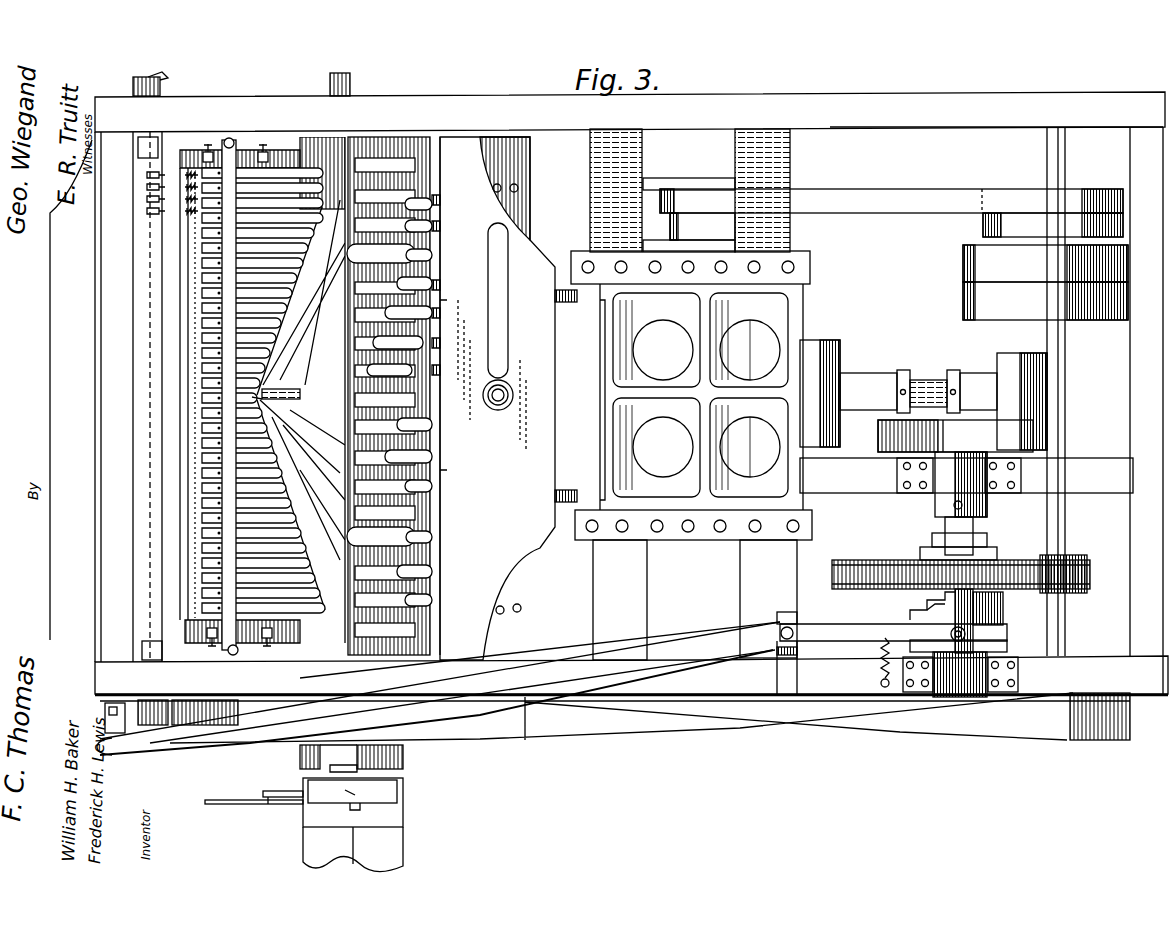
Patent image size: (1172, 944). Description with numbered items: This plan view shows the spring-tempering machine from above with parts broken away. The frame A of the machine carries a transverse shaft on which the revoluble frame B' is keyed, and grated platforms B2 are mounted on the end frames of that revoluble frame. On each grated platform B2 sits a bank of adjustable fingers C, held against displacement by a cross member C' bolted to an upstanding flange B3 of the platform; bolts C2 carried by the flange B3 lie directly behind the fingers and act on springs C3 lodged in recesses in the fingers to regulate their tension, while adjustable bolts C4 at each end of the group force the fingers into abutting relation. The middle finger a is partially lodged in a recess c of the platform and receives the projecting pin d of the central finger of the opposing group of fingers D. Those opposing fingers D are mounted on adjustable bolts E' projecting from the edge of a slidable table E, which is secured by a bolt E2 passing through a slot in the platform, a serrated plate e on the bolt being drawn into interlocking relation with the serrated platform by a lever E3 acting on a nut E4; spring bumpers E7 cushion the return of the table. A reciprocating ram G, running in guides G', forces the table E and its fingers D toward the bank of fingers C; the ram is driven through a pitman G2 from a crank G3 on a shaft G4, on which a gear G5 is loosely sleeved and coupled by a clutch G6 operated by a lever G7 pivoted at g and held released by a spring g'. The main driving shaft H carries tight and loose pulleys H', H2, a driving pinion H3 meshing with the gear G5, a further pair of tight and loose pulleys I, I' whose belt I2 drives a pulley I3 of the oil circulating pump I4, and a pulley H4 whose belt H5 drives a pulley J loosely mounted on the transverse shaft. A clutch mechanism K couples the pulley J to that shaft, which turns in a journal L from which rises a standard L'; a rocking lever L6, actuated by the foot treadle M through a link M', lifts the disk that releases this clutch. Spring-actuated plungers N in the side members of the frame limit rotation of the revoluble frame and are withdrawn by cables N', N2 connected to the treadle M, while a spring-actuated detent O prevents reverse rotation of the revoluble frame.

The frame of the machine A is at (413, 104).
The cable N' is at (163, 82).
The spring actuated detent O is at (340, 143).
The spring actuated plungers N is at (131, 397).
The upstanding flange B3 is at (197, 142).
The cross member C' is at (230, 396).
The adjustable bolts C4 is at (265, 152).
The bolts C2 is at (158, 214).
The springs C3 is at (188, 213).
The serrated plate e is at (304, 268).
The adjustable fingers C is at (263, 404).
The revoluble frame B' is at (301, 390).
The middle finger a is at (285, 389).
The recess c is at (283, 402).
The projecting pin d is at (373, 396).
The grated platforms B2 is at (372, 148).
The adjustable fingers D is at (407, 283).
The slidable tables E is at (497, 398).
The lever E3 is at (505, 292).
The bolt E2 is at (510, 392).
The nut E4 is at (492, 407).
The adjustable bolts E' is at (456, 373).
The spring bumpers E7 is at (566, 302).
The reciprocating ram G is at (706, 394).
The guides G' is at (705, 408).
The pulley I3 is at (692, 188).
The belt I2 is at (902, 208).
The oil circulating pump I4 is at (702, 227).
The loose pulley I' is at (1115, 197).
The tight pulley I is at (1064, 224).
The main driving shaft H is at (1070, 391).
The tight pulley H' is at (1045, 263).
The loose pulley H2 is at (1045, 301).
The pitman G2 is at (872, 378).
The crank G3 is at (1008, 365).
The shaft G4 is at (975, 523).
The gear G5 is at (872, 563).
The driving pinion H3 is at (1075, 593).
The clutch G6 is at (910, 606).
The lever G7 is at (825, 632).
The pivot g is at (772, 621).
The spring g' is at (866, 662).
The belt connection H5 is at (907, 735).
The pulley H4 is at (1090, 742).
The pulley J is at (525, 742).
The cable N2 is at (153, 725).
The clutch mechanism K is at (359, 758).
The standard L' is at (364, 804).
The journal L is at (353, 849).
The rocking lever L6 is at (268, 793).
The foot treadle M is at (254, 817).
The link M' is at (260, 825).